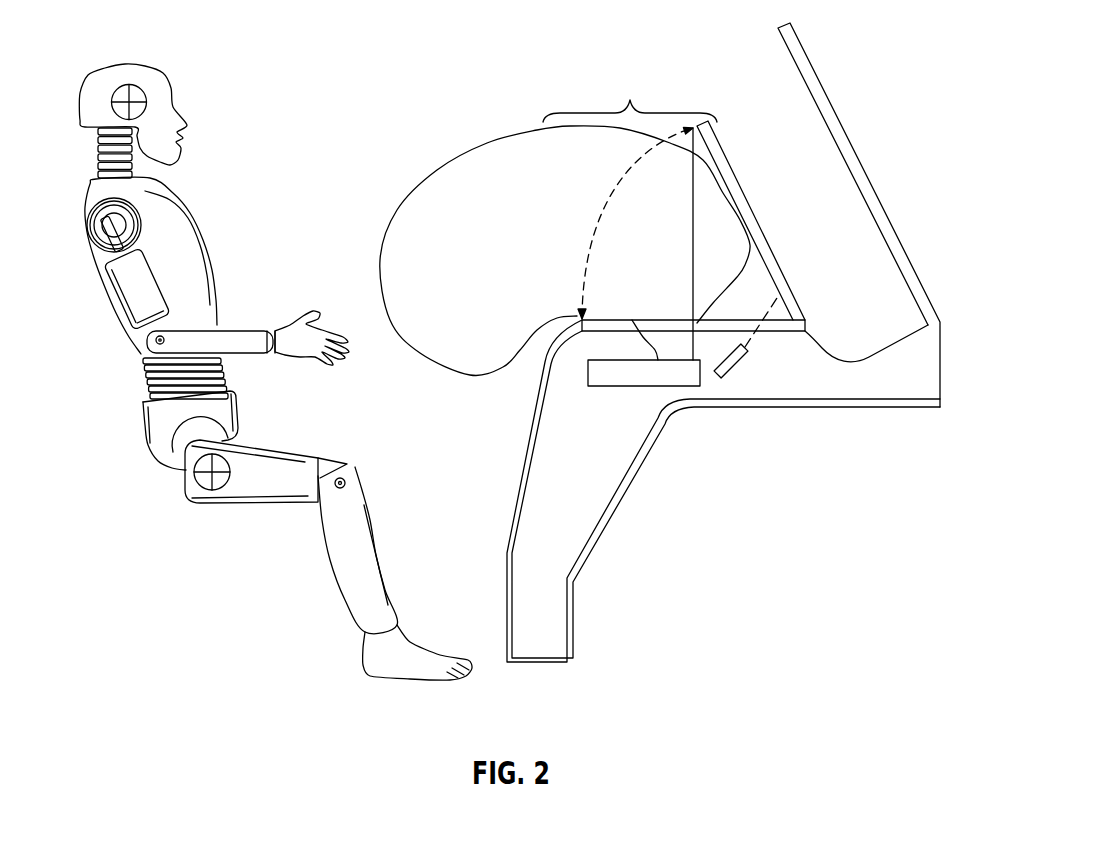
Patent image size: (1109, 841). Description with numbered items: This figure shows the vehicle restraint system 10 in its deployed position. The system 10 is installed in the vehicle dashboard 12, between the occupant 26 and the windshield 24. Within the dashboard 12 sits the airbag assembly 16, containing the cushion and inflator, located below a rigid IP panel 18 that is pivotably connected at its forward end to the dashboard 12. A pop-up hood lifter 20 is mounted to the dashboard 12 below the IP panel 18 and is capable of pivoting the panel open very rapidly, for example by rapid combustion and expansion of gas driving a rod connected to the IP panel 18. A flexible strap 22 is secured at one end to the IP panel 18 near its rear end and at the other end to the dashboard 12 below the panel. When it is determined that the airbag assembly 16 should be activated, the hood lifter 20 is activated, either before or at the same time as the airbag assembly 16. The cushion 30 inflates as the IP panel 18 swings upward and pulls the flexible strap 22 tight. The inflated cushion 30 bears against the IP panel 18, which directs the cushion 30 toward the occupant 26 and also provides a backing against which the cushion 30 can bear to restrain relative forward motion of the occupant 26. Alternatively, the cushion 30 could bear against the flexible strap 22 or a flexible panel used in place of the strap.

The vehicle restraint system 10 is at (630, 93).
The vehicle dashboard 12 is at (526, 447).
The airbag assembly 16 is at (643, 387).
The IP panel 18 is at (755, 222).
The hood lifter 20 is at (740, 366).
The flexible strap 22 is at (692, 263).
The windshield 24 is at (857, 153).
The occupant 26 is at (84, 205).
The cushion 30 is at (443, 170).